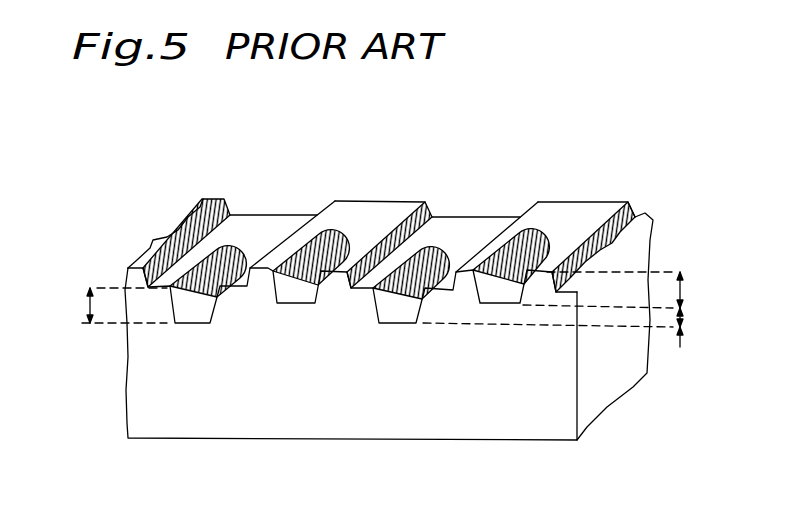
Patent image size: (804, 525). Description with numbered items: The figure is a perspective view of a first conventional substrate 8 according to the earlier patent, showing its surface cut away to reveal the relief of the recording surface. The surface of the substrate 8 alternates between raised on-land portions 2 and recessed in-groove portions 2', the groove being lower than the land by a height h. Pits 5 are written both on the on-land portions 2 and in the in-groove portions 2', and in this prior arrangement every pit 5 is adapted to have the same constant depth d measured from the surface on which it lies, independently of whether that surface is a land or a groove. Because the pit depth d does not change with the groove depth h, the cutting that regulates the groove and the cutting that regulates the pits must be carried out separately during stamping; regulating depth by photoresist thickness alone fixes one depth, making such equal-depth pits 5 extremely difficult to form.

The on-land portion 2 is at (384, 203).
The in-groove portion 2' is at (485, 175).
The pit 5 is at (210, 221).
The substrate 8 is at (310, 430).
The pit depth d is at (87, 305).
The groove depth h is at (683, 322).